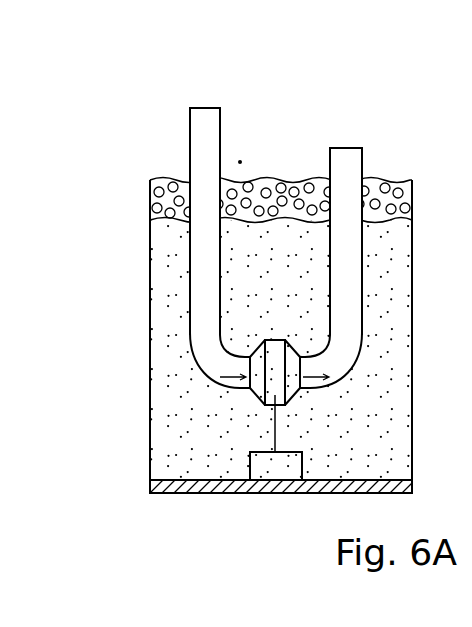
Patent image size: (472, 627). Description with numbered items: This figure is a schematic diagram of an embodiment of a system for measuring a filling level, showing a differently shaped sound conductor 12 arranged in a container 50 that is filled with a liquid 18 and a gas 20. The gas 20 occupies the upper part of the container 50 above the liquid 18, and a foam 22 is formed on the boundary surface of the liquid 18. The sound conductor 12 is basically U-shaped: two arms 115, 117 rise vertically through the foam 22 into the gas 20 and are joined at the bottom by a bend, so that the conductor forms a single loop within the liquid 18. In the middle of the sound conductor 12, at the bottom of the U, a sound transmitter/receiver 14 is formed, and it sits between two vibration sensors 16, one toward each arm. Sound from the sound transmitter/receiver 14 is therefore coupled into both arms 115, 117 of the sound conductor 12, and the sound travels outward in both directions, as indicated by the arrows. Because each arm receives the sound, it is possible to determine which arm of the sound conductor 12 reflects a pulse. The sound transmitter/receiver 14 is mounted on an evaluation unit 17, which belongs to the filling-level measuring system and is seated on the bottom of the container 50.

The sound conductor 12 is at (215, 242).
The sound transmitter/receiver 14 is at (272, 373).
The vibration sensor 16 is at (263, 353).
The evaluation unit 17 is at (262, 467).
The liquid 18 is at (381, 288).
The gas 20 is at (240, 162).
The foam 22 is at (289, 187).
The container 50 is at (188, 492).
The first arm of the sound conductor 115 is at (207, 168).
The second arm of the sound conductor 117 is at (347, 163).